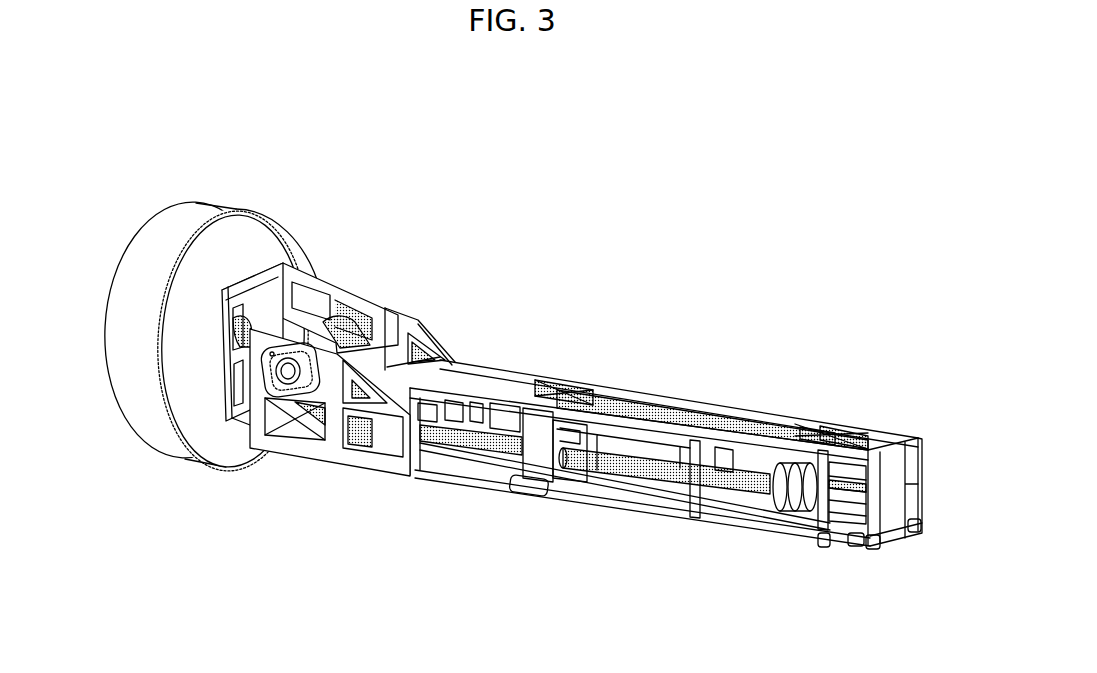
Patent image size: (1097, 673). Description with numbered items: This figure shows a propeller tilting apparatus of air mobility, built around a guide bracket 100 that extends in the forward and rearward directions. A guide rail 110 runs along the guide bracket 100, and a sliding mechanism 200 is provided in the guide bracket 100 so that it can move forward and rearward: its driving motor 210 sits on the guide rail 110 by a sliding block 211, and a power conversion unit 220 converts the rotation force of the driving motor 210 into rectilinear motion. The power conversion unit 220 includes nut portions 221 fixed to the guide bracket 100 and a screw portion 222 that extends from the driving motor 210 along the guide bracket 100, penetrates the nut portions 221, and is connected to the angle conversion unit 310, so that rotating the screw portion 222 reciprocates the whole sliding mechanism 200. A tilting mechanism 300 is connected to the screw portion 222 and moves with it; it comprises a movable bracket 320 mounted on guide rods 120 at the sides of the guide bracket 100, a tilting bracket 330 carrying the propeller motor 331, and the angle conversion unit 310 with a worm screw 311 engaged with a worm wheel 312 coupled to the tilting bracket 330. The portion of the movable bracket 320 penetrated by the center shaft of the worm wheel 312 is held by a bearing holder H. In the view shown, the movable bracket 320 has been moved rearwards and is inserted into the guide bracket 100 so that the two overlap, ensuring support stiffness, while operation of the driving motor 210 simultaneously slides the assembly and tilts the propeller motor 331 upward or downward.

The guide bracket 100 is at (656, 392).
The guide rail 110 is at (764, 418).
The guide rods 120 is at (467, 480).
The sliding mechanism 200 is at (745, 499).
The driving motor 210 is at (850, 510).
The sliding block 211 is at (827, 430).
The power conversion unit 220 is at (647, 594).
The nut portions 221 is at (567, 497).
The screw portion 222 is at (640, 495).
The tilting mechanism 300 is at (395, 306).
The angle conversion unit 310 is at (388, 541).
The worm screw 311 is at (305, 437).
The worm wheel 312 is at (367, 432).
The movable bracket 320 is at (430, 360).
The tilting bracket 330 is at (330, 282).
The propeller motor 331 is at (213, 208).
The bearing holder H is at (268, 388).